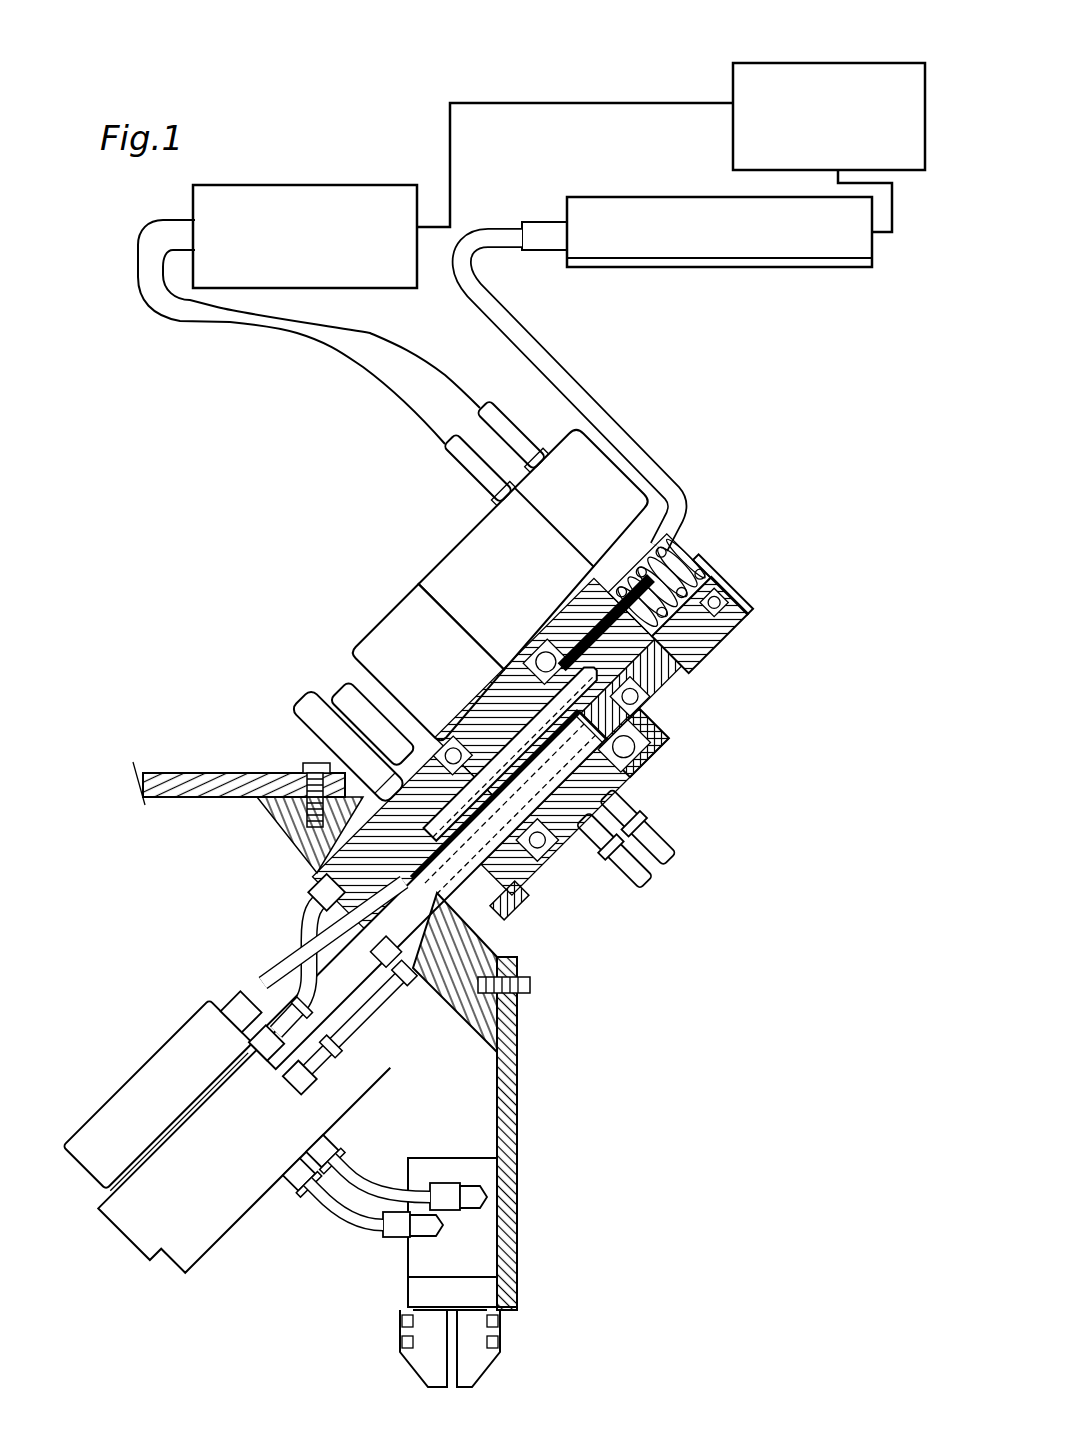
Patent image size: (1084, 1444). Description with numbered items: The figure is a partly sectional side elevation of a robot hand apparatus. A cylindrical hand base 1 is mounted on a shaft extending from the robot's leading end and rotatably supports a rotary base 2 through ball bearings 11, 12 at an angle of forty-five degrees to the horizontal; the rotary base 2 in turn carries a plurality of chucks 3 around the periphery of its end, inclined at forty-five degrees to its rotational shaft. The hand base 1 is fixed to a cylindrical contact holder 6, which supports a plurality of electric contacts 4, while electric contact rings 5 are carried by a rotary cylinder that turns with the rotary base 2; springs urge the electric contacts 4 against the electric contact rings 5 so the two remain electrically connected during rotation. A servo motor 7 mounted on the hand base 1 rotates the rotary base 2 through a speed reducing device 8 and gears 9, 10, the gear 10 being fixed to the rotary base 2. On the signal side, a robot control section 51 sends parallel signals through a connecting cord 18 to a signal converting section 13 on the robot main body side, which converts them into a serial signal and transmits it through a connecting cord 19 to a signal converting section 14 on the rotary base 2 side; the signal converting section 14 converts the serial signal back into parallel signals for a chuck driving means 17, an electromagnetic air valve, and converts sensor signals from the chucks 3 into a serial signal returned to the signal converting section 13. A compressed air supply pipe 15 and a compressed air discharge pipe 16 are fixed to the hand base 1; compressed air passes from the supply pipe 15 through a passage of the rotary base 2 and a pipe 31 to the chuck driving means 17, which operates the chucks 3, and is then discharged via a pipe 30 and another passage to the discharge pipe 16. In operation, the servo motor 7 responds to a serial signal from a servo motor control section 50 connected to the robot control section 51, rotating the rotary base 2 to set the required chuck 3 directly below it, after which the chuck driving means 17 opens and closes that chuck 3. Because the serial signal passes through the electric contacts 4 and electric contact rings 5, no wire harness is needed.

The hand base 1 is at (418, 584).
The rotary base 2 is at (445, 1005).
The chuck 3 is at (417, 1263).
The electric contact 4 is at (712, 568).
The electric contact ring 5 is at (717, 637).
The contact holder 6 is at (718, 562).
The servo motor 7 is at (481, 540).
The speed reducing device 8 is at (382, 620).
The gear 9 is at (303, 693).
The gear 10 is at (507, 900).
The ball bearing 11 is at (543, 860).
The ball bearing 12 is at (624, 748).
The signal converting section 13 is at (663, 200).
The signal converting section 14 is at (148, 1080).
The compressed air supply pipe 15 is at (667, 855).
The compressed air discharge pipe 16 is at (643, 883).
The chuck driving means 17 is at (158, 1228).
The connecting cord 18 is at (597, 412).
The connecting cord 19 is at (275, 975).
The pipe 30 is at (368, 1020).
The pipe 31 is at (297, 907).
The servo motor control section 50 is at (362, 185).
The robot control section 51 is at (873, 82).